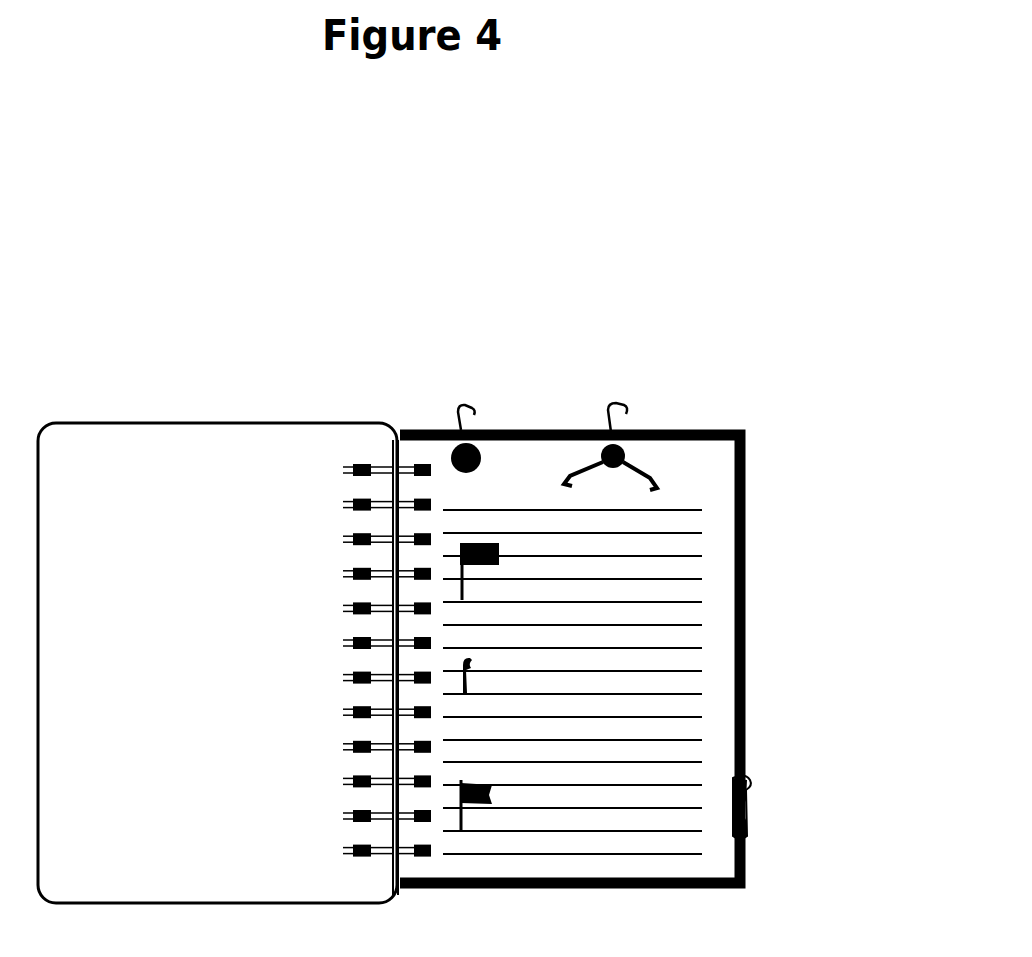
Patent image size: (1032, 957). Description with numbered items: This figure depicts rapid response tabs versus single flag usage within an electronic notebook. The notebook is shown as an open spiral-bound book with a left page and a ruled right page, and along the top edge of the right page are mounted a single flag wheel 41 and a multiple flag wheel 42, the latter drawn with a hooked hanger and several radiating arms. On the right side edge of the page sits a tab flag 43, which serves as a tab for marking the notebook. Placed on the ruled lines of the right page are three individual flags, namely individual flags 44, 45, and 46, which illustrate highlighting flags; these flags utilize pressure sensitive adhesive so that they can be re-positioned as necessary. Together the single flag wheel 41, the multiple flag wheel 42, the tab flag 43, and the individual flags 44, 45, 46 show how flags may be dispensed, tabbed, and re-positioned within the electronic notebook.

The single flag wheel 41 is at (469, 364).
The multiple flag wheel 42 is at (623, 364).
The tab flag 43 is at (788, 810).
The individual flag 44 is at (425, 559).
The individual flag 45 is at (420, 681).
The individual flag 46 is at (420, 797).